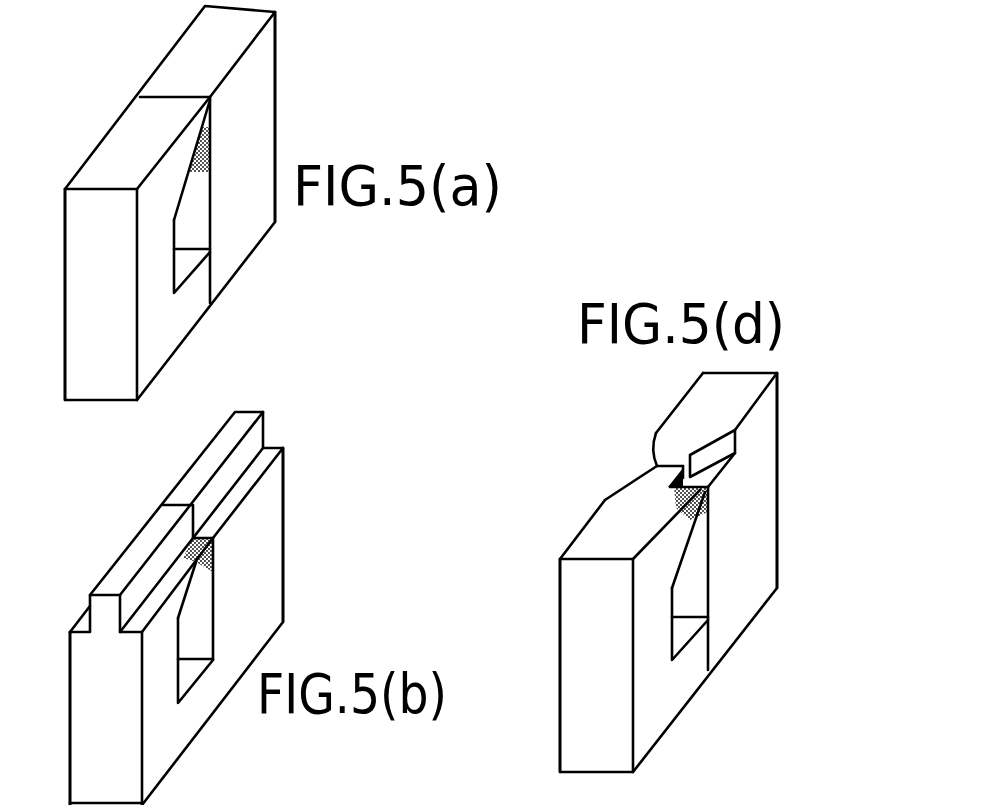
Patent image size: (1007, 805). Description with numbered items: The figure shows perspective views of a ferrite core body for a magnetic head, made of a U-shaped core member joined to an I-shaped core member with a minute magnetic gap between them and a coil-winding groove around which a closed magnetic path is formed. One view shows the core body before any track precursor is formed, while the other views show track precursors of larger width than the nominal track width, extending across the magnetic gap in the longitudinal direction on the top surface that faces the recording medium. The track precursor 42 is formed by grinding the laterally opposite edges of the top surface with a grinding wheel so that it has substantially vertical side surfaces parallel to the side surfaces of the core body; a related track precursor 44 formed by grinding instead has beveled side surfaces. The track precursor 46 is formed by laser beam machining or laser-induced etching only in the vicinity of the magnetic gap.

The track precursor 42 is at (242, 420).
The track precursor 44 is at (166, 790).
The track precursor 46 is at (655, 478).